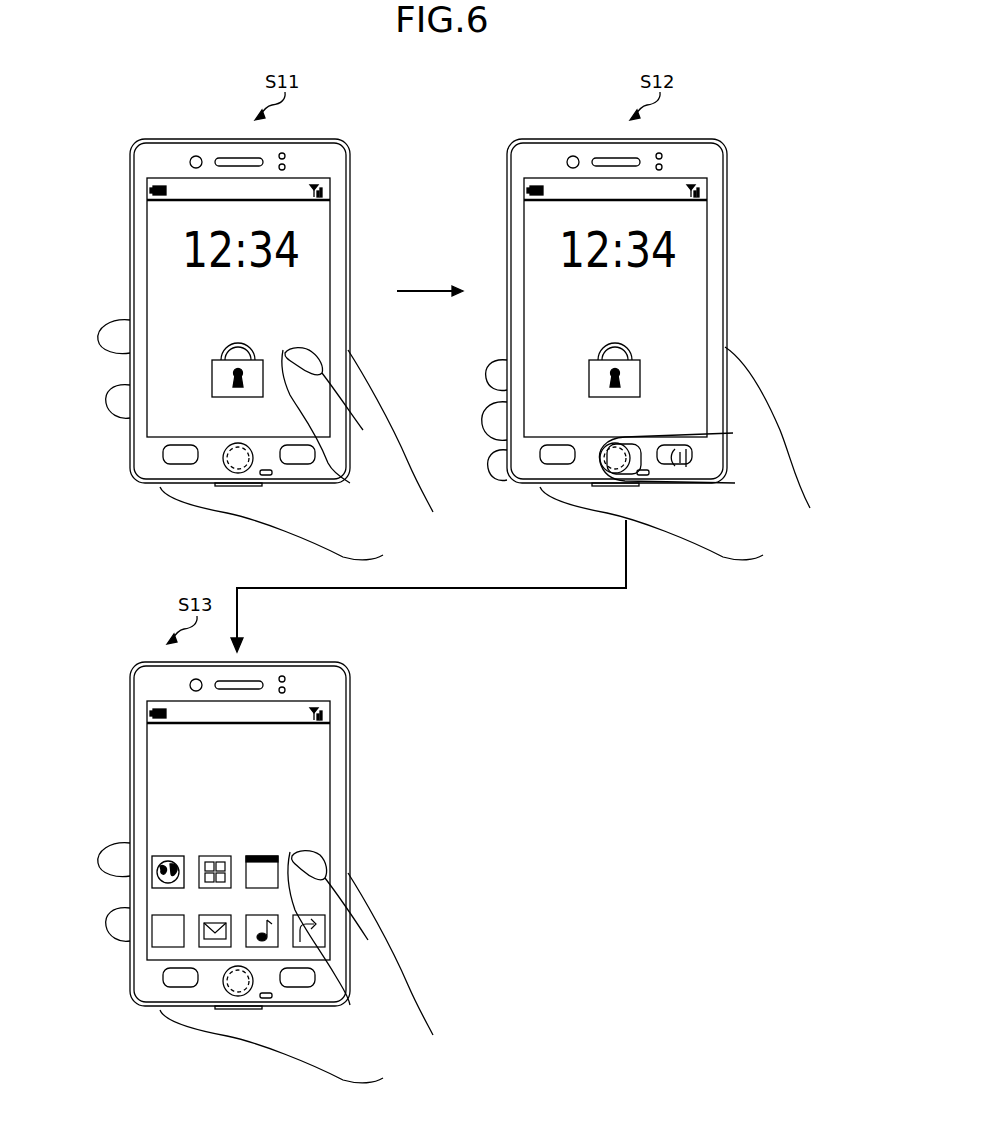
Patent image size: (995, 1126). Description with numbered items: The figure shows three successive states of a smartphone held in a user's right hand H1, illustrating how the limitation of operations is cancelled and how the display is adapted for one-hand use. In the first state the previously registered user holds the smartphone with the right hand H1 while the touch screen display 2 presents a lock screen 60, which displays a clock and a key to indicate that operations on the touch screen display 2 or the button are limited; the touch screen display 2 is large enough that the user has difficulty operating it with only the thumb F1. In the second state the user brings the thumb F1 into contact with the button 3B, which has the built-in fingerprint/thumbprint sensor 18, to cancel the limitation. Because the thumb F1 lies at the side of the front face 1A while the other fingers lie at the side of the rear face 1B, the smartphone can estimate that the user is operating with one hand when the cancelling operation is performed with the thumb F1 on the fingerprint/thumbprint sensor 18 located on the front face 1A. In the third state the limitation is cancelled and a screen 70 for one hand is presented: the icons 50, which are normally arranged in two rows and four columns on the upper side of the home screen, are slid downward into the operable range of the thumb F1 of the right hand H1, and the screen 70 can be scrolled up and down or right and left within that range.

The front face 1A is at (148, 167).
The rear face 1B is at (130, 306).
The touch screen display 2 is at (335, 233).
The button 3B is at (222, 482).
The fingerprint/thumbprint sensor 18 is at (243, 475).
The lock screen 60 is at (160, 262).
The screen for one hand 70 is at (160, 784).
The icon 50 is at (150, 868).
The thumb F1 is at (323, 382).
The right hand H1 is at (383, 437).